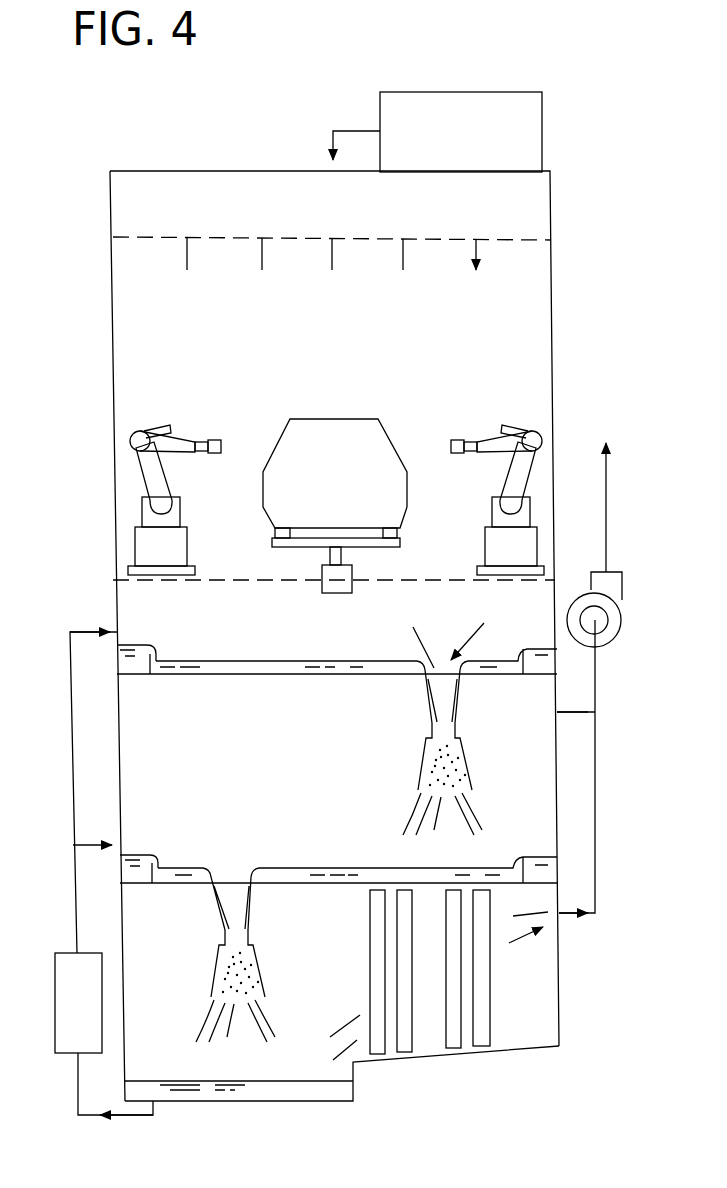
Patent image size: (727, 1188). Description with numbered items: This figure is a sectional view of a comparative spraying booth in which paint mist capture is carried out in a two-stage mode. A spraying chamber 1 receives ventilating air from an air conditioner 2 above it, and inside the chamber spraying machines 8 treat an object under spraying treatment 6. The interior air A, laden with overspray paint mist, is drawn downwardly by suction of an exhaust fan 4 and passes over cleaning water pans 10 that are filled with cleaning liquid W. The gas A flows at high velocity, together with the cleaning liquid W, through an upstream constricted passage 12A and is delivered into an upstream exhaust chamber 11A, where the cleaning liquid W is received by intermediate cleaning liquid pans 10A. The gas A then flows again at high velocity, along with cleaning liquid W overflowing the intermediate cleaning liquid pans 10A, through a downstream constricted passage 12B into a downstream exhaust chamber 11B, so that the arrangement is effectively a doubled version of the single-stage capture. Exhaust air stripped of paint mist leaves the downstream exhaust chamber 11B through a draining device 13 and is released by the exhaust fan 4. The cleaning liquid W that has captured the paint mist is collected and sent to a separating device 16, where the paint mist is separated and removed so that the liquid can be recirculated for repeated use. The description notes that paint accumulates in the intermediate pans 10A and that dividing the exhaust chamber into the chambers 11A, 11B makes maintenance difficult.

The spraying chamber 1 is at (334, 636).
The air conditioner 2 is at (388, 112).
The exhaust fan 4 is at (617, 620).
The object under spraying treatment 6 is at (380, 440).
The spraying machines 8 is at (180, 437).
The cleaning water pans 10 is at (213, 673).
The intermediate cleaning liquid pans 10A is at (185, 882).
The upstream exhaust chamber 11A is at (338, 815).
The downstream exhaust chamber 11B is at (342, 1006).
The upstream constricted passage 12A is at (446, 722).
The downstream constricted passage 12B is at (218, 912).
The draining device 13 is at (455, 1038).
The separating device 16 is at (60, 983).
The cleaning liquid W is at (287, 660).
The paint mist laden gas A is at (417, 638).